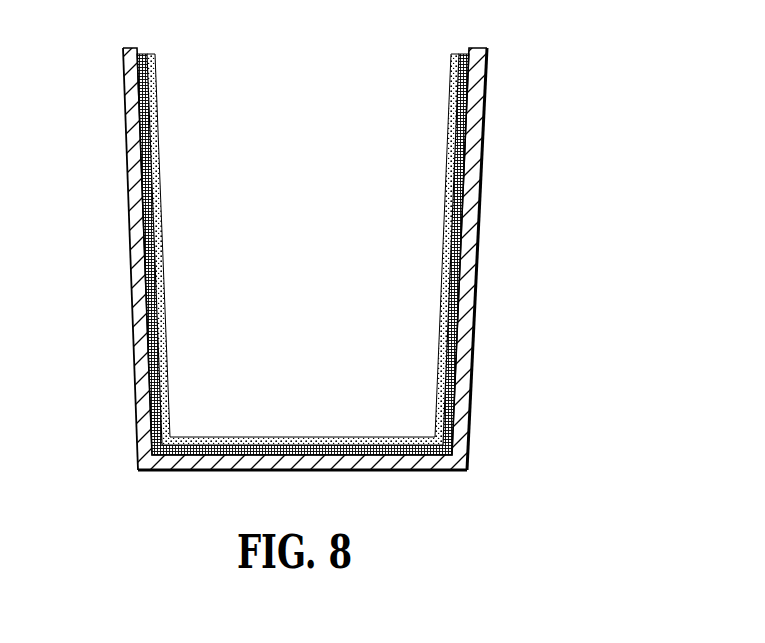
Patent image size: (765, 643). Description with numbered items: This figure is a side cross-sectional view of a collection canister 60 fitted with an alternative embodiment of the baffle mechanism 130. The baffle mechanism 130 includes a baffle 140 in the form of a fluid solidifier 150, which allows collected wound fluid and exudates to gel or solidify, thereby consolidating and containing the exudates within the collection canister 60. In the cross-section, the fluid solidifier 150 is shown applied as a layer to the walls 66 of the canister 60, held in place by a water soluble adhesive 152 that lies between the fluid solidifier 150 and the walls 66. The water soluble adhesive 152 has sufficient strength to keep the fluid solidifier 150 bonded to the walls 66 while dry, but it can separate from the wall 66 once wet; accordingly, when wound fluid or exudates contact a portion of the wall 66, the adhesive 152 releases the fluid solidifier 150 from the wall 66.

The collection canister 60 is at (133, 372).
The walls 66 is at (145, 222).
The baffle mechanism 130 is at (156, 77).
The baffle 140 is at (140, 95).
The fluid solidifier 150 is at (463, 470).
The water soluble adhesive 152 is at (427, 453).